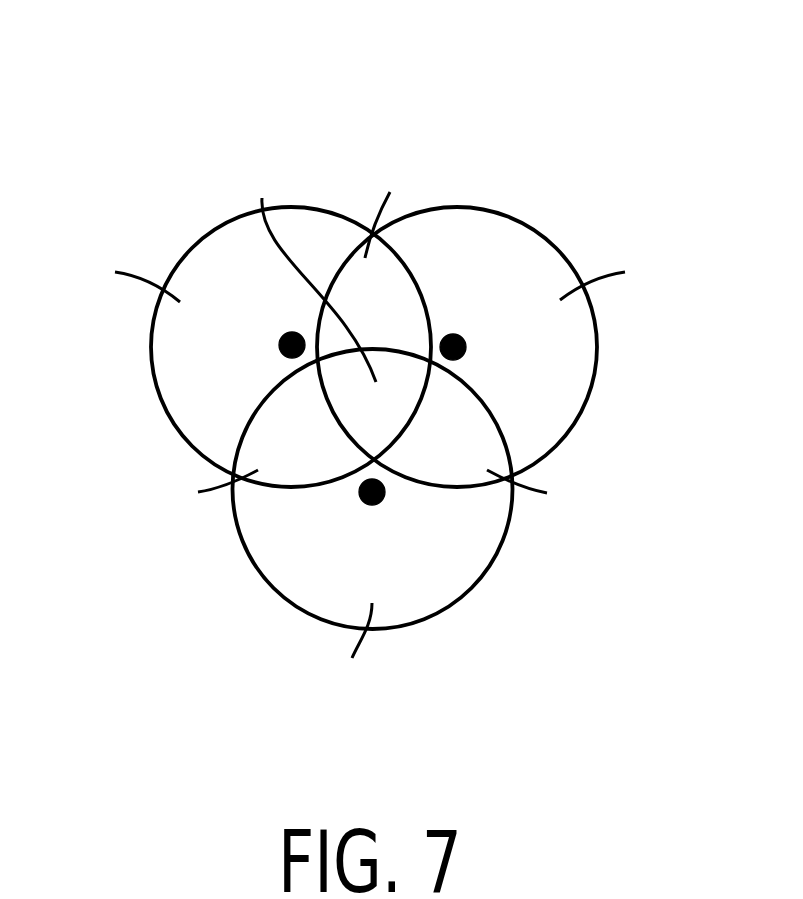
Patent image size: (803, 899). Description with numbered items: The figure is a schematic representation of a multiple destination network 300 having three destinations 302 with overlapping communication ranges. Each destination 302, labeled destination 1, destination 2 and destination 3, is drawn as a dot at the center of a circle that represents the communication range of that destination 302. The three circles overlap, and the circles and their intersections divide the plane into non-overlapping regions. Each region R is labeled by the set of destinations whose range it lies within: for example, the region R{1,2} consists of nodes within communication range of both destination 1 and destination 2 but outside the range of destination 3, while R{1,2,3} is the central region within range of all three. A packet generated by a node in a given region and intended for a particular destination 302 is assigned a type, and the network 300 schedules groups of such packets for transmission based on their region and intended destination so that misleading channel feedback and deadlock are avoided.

The multiple destination network 300 is at (126, 123).
The destination 302 is at (371, 428).
The destination 1 is at (281, 331).
The destination 2 is at (464, 331).
The destination 3 is at (372, 517).